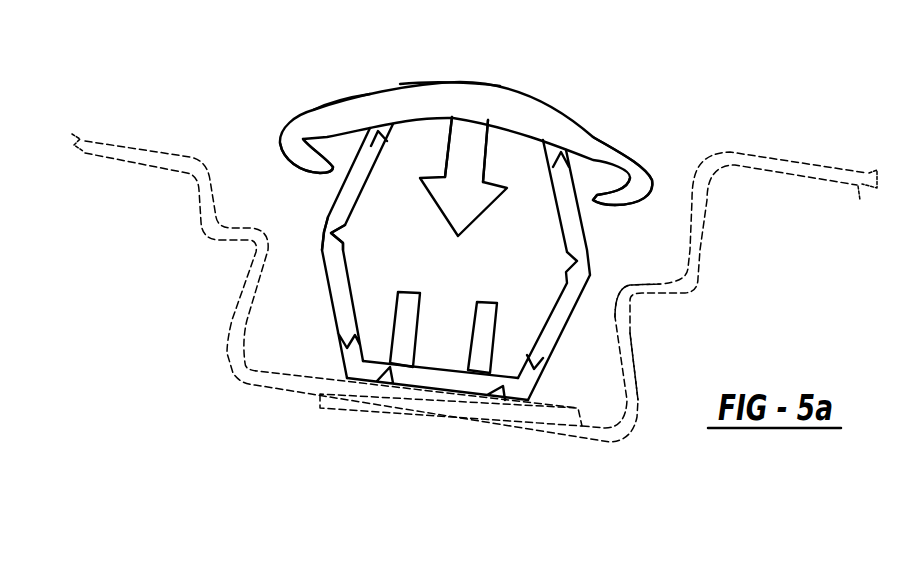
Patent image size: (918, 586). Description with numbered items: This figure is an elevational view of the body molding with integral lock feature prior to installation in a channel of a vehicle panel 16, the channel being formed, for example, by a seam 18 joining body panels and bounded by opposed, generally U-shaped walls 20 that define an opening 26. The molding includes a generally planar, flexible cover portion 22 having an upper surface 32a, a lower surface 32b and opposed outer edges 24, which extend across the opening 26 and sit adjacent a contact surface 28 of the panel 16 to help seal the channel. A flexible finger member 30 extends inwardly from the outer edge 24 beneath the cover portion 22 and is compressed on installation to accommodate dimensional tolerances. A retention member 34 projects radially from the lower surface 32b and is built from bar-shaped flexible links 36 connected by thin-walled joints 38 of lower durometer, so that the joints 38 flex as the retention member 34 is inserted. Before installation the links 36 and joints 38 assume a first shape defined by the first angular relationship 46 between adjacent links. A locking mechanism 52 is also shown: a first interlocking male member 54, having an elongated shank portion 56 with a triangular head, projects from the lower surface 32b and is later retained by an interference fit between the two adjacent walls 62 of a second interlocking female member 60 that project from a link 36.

The panel 16 is at (827, 151).
The seam 18 is at (449, 426).
The walls 20 is at (630, 332).
The cover portion 22 is at (547, 95).
The outer edges 24 is at (628, 165).
The opening 26 is at (257, 168).
The contact surface 28 is at (648, 281).
The finger member 30 is at (625, 201).
The upper surface 32a is at (423, 84).
The lower surface 32b is at (313, 108).
The retention member 34 is at (598, 230).
The flexible links 36 is at (343, 300).
The joint 38 is at (537, 384).
The first angular relationship 46 is at (318, 200).
The locking mechanism 52 is at (490, 220).
The first interlocking male member 54 is at (440, 150).
The shank portion 56 is at (473, 142).
The second interlocking female member 60 is at (395, 320).
The walls 62 is at (490, 338).